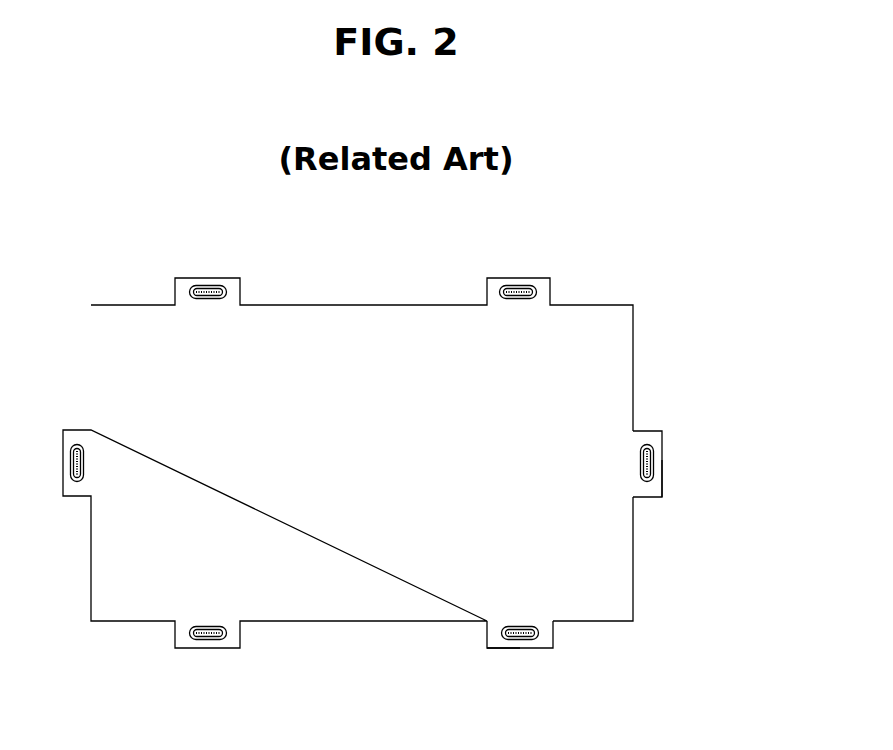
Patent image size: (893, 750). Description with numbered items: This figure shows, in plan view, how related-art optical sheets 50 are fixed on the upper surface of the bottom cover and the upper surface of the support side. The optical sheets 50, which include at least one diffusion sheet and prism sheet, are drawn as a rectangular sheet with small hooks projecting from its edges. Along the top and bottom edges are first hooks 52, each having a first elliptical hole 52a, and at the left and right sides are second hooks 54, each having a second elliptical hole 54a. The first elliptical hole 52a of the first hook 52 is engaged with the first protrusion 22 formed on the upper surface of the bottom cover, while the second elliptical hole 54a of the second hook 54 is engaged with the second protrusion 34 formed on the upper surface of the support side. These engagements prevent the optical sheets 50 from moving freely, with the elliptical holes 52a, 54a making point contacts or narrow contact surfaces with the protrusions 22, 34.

The optical sheets 50 is at (367, 320).
The second hook 54 is at (655, 437).
The second protrusion 34 is at (650, 463).
The second elliptical hole 54a is at (660, 471).
The first hook 52 is at (543, 642).
The first protrusion 22 is at (518, 641).
The first elliptical hole 52a is at (504, 641).